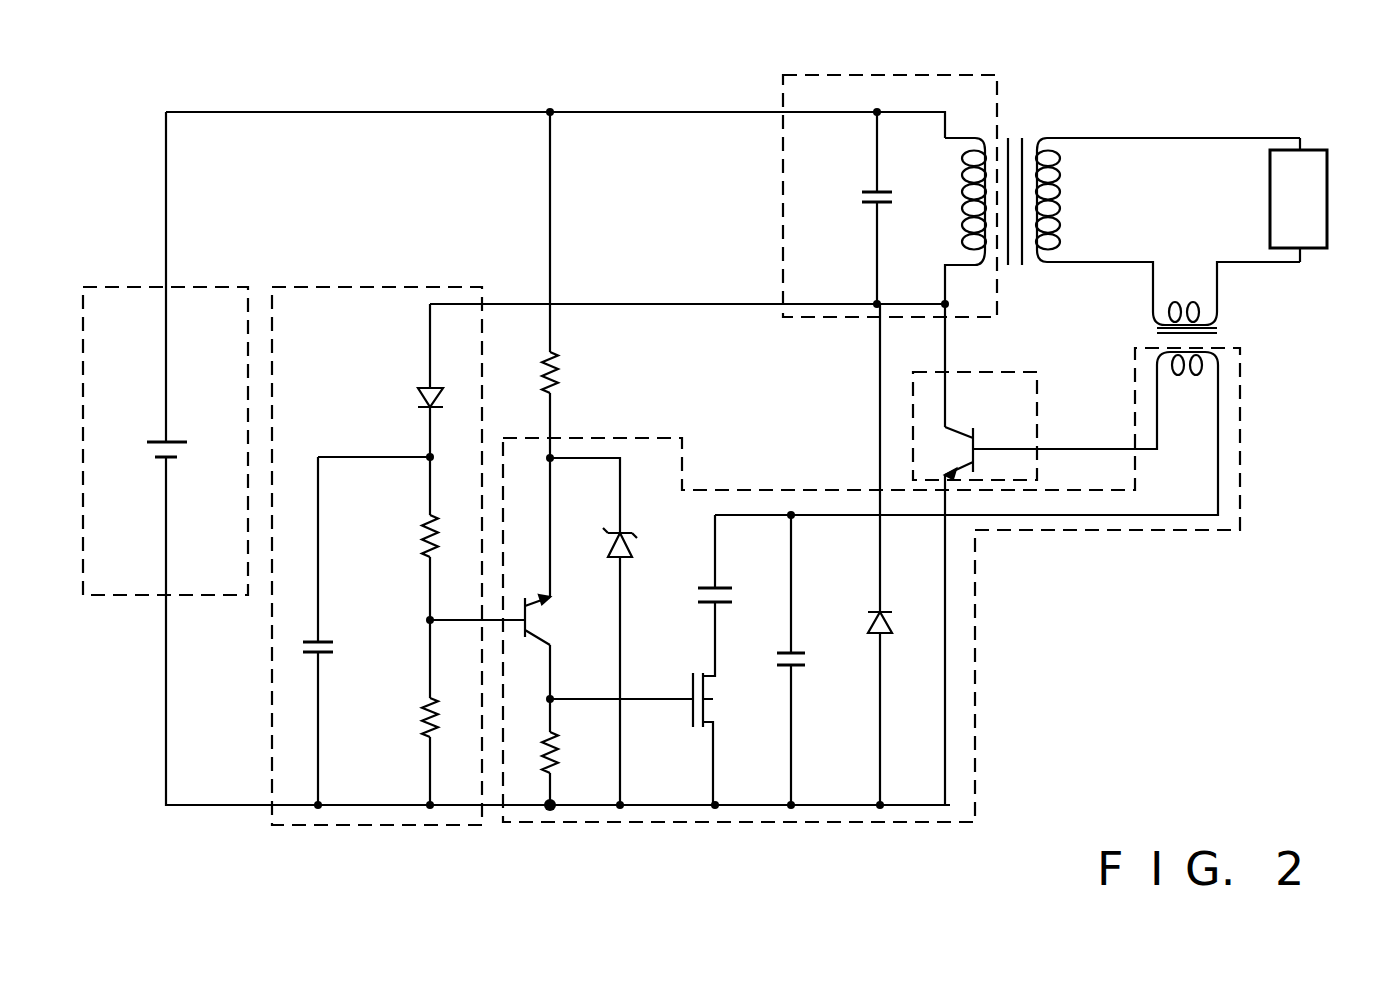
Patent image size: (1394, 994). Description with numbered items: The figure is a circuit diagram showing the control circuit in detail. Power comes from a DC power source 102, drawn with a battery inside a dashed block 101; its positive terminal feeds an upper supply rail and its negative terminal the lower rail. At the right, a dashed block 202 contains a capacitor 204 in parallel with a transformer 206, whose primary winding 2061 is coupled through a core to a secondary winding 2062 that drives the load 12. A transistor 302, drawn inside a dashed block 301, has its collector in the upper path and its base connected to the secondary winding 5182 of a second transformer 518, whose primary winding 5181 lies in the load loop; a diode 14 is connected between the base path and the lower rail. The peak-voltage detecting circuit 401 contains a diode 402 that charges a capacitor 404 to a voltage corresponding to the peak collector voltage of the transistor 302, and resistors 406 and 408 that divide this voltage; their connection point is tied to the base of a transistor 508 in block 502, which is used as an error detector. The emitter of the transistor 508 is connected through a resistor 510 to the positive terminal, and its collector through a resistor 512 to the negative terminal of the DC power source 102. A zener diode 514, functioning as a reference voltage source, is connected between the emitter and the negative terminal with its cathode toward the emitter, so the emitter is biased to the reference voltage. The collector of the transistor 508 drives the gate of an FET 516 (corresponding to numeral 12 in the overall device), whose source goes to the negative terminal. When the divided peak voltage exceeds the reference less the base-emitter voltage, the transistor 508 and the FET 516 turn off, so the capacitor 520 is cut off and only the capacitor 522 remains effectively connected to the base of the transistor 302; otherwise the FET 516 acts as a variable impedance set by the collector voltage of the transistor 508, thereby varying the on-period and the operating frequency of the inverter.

The DC power source 101 is at (118, 597).
The DC power source 102 is at (182, 440).
The peak-voltage detecting circuit 401 is at (380, 828).
The diode 402 is at (417, 396).
The capacitor 404 is at (336, 650).
The resistor 406 is at (422, 535).
The resistor 408 is at (422, 722).
The switching circuit 502 is at (672, 825).
The resistor 510 is at (562, 372).
The resistor 512 is at (560, 745).
The zener diode 514 is at (630, 550).
The transistor 508 is at (535, 623).
The FET 516 is at (707, 690).
The capacitor 520 is at (735, 597).
The capacitor 522 is at (808, 662).
The diode 14 is at (888, 636).
The detection circuit 301 is at (1040, 418).
The transistor 302 is at (977, 433).
The resonant circuit 202 is at (878, 73).
The capacitor 204 is at (862, 208).
The transformer 206 is at (1096, 202).
The primary winding 2061 is at (962, 212).
The secondary winding 2062 is at (1062, 205).
The FET 12 is at (1328, 183).
The feedback transformer 518 is at (1242, 328).
The primary winding of feedback transformer 5181 is at (1182, 305).
The secondary winding of feedback transformer 5182 is at (1200, 378).